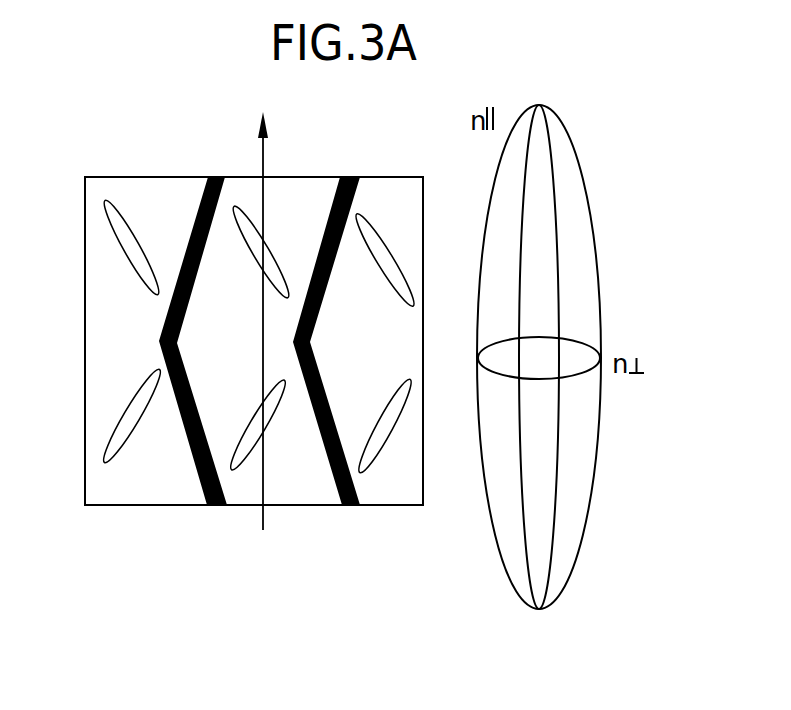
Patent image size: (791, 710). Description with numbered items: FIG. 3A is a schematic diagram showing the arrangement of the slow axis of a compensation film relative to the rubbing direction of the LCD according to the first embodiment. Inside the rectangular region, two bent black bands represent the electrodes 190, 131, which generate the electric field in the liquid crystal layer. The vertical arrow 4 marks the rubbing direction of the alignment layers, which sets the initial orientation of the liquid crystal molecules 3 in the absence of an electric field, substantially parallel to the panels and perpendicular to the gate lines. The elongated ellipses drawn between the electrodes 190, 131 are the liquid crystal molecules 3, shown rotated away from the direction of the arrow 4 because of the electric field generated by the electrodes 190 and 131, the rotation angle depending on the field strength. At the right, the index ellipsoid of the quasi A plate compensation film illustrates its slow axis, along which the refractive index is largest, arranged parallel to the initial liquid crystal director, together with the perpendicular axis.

The electrode 190 is at (196, 206).
The electrode 131 is at (372, 195).
The arrow 4 is at (264, 152).
The liquid crystal molecule 3 is at (121, 245).